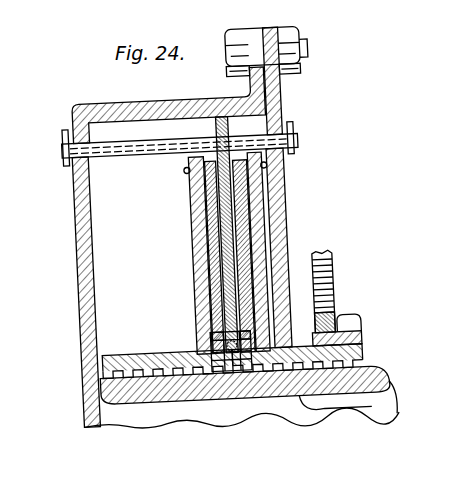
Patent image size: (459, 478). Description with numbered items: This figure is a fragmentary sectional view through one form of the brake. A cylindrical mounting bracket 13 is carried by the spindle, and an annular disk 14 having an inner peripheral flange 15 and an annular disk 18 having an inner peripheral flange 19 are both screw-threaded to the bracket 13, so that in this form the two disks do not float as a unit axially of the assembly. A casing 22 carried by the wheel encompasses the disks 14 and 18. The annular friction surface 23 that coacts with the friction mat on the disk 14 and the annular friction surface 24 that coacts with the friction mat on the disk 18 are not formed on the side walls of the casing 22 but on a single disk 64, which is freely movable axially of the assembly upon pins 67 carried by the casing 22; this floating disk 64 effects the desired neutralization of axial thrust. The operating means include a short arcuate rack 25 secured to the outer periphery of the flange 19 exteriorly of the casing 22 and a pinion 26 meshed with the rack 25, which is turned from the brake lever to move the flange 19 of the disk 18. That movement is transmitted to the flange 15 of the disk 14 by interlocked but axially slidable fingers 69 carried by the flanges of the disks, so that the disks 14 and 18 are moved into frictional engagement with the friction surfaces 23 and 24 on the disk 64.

The cylindrical mounting bracket 13 is at (382, 403).
The annular disk 14 is at (195, 260).
The inner peripheral flange 15 is at (144, 357).
The annular disk 18 is at (265, 235).
The inner peripheral flange 19 is at (362, 352).
The casing 22 is at (121, 105).
The annular friction surface 23 is at (263, 198).
The annular friction surface 24 is at (220, 186).
The arcuate rack 25 is at (338, 316).
The pinion 26 is at (337, 286).
The disk 64 is at (214, 228).
The pins 67 is at (75, 143).
The fingers 69 is at (230, 358).